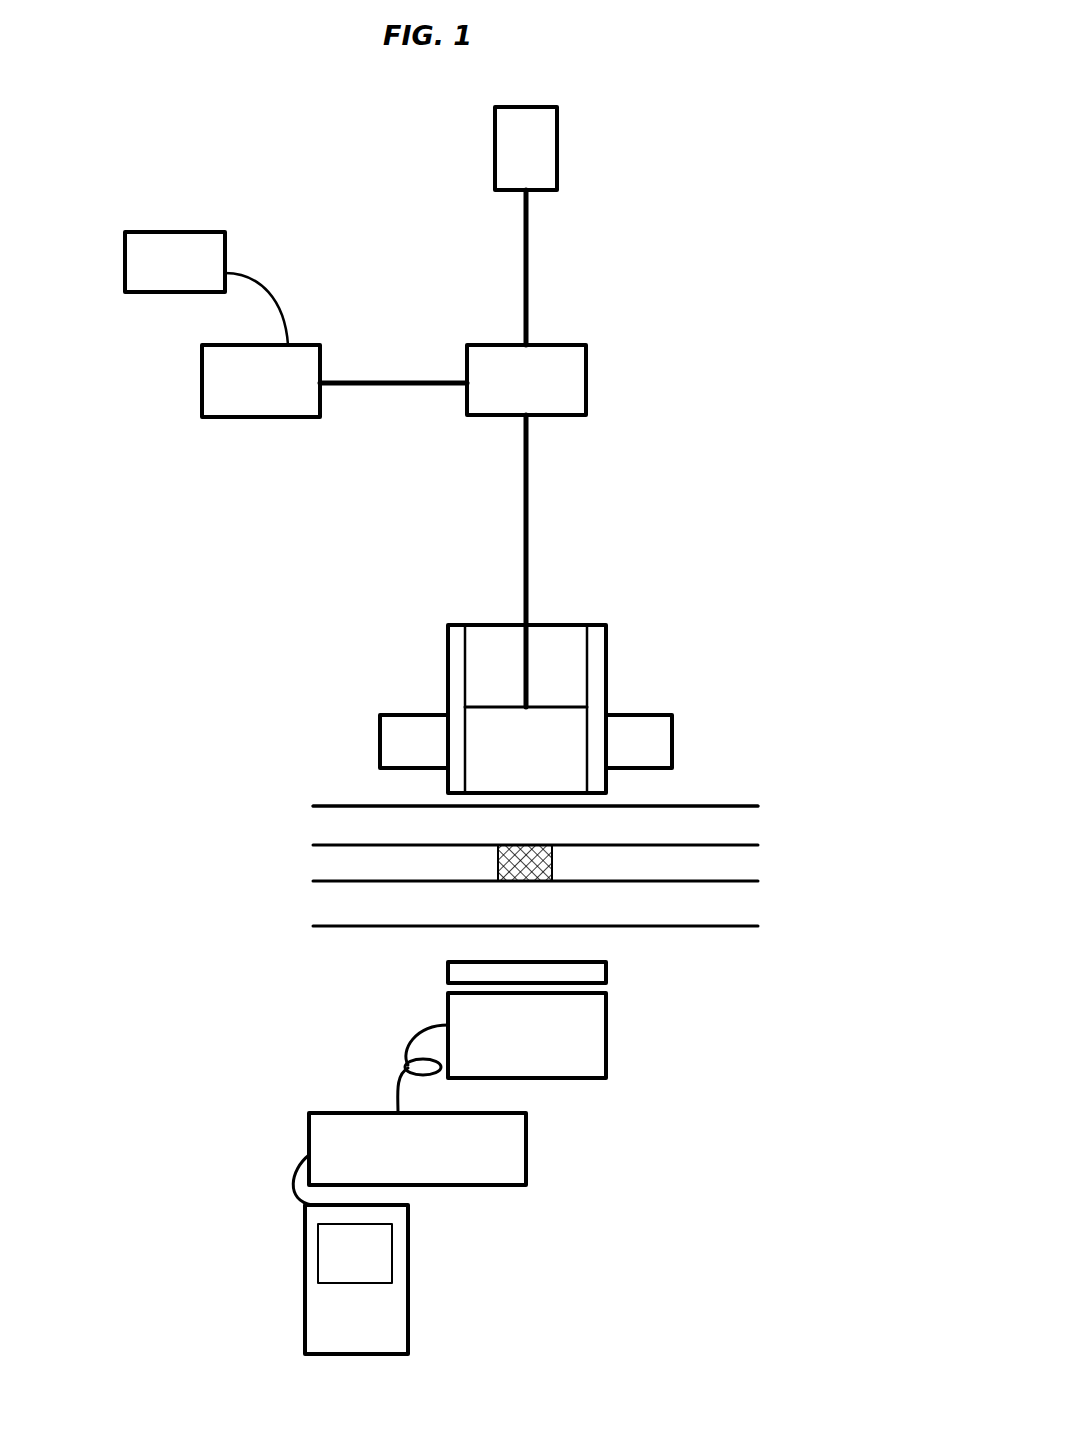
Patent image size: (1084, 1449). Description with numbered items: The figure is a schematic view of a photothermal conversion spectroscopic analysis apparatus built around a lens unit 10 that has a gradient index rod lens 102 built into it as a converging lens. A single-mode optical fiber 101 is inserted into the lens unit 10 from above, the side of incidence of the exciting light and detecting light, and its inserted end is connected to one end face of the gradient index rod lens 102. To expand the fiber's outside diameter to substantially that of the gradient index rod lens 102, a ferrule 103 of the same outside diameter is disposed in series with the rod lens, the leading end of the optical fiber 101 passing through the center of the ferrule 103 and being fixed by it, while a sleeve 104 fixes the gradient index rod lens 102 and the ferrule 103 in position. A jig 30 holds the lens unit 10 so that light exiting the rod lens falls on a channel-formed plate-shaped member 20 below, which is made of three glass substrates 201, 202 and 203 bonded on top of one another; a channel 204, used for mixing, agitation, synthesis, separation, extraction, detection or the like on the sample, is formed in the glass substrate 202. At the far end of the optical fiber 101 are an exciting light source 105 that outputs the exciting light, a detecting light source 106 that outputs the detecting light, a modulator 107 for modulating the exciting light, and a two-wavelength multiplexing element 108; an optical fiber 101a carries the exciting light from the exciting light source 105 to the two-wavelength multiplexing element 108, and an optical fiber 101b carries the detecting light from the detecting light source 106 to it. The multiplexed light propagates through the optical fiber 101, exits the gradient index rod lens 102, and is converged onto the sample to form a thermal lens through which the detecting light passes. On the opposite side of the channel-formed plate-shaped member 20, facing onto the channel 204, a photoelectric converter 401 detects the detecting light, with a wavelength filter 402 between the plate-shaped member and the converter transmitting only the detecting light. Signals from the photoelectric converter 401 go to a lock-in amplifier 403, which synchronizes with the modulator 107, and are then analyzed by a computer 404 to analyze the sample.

The lens unit 10 is at (606, 640).
The channel-formed plate-shaped member 20 is at (718, 806).
The jig 30 is at (672, 735).
The optical fiber 101 is at (528, 580).
The optical fiber 101a is at (380, 380).
The optical fiber 101b is at (529, 268).
The gradient index rod lens 102 is at (570, 725).
The ferrule 103 is at (500, 655).
The sleeve 104 is at (455, 687).
The exciting light source 105 is at (208, 385).
The detecting light source 106 is at (553, 145).
The modulator 107 is at (160, 283).
The two-wavelength multiplexing element 108 is at (568, 378).
The glass substrate 201 is at (728, 830).
The glass substrate 202 is at (728, 866).
The glass substrate 203 is at (732, 905).
The channel 204 is at (528, 881).
The photoelectric converter 401 is at (598, 1025).
The wavelength filter 402 is at (600, 972).
The lock-in amplifier 403 is at (515, 1145).
The computer 404 is at (408, 1290).